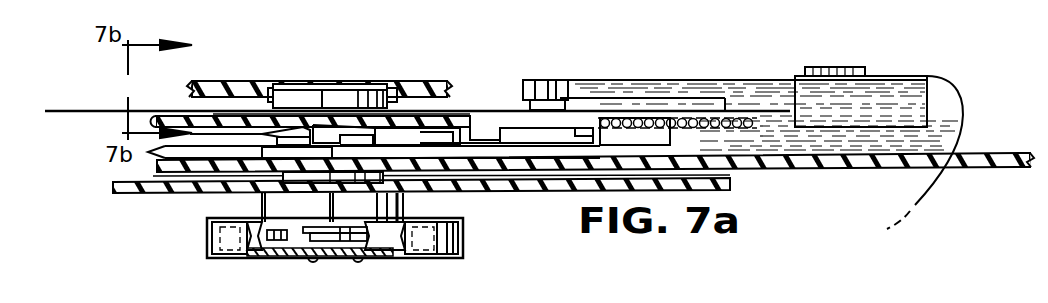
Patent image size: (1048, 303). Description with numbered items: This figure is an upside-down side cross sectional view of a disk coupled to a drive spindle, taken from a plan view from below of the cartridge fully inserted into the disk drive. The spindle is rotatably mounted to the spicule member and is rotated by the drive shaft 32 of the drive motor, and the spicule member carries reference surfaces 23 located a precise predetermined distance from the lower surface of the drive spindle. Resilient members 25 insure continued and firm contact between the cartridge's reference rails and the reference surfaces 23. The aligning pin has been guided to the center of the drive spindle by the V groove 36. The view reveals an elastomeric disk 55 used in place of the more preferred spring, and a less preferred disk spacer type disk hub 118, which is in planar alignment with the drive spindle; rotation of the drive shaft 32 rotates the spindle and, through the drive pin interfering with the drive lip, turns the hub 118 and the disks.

The elastomeric disk 55 is at (305, 84).
The disk hub 118 is at (344, 96).
The reference surfaces 23 is at (450, 118).
The resilient members 25 is at (487, 118).
The drive shaft 32 is at (310, 237).
The V groove 36 is at (387, 256).